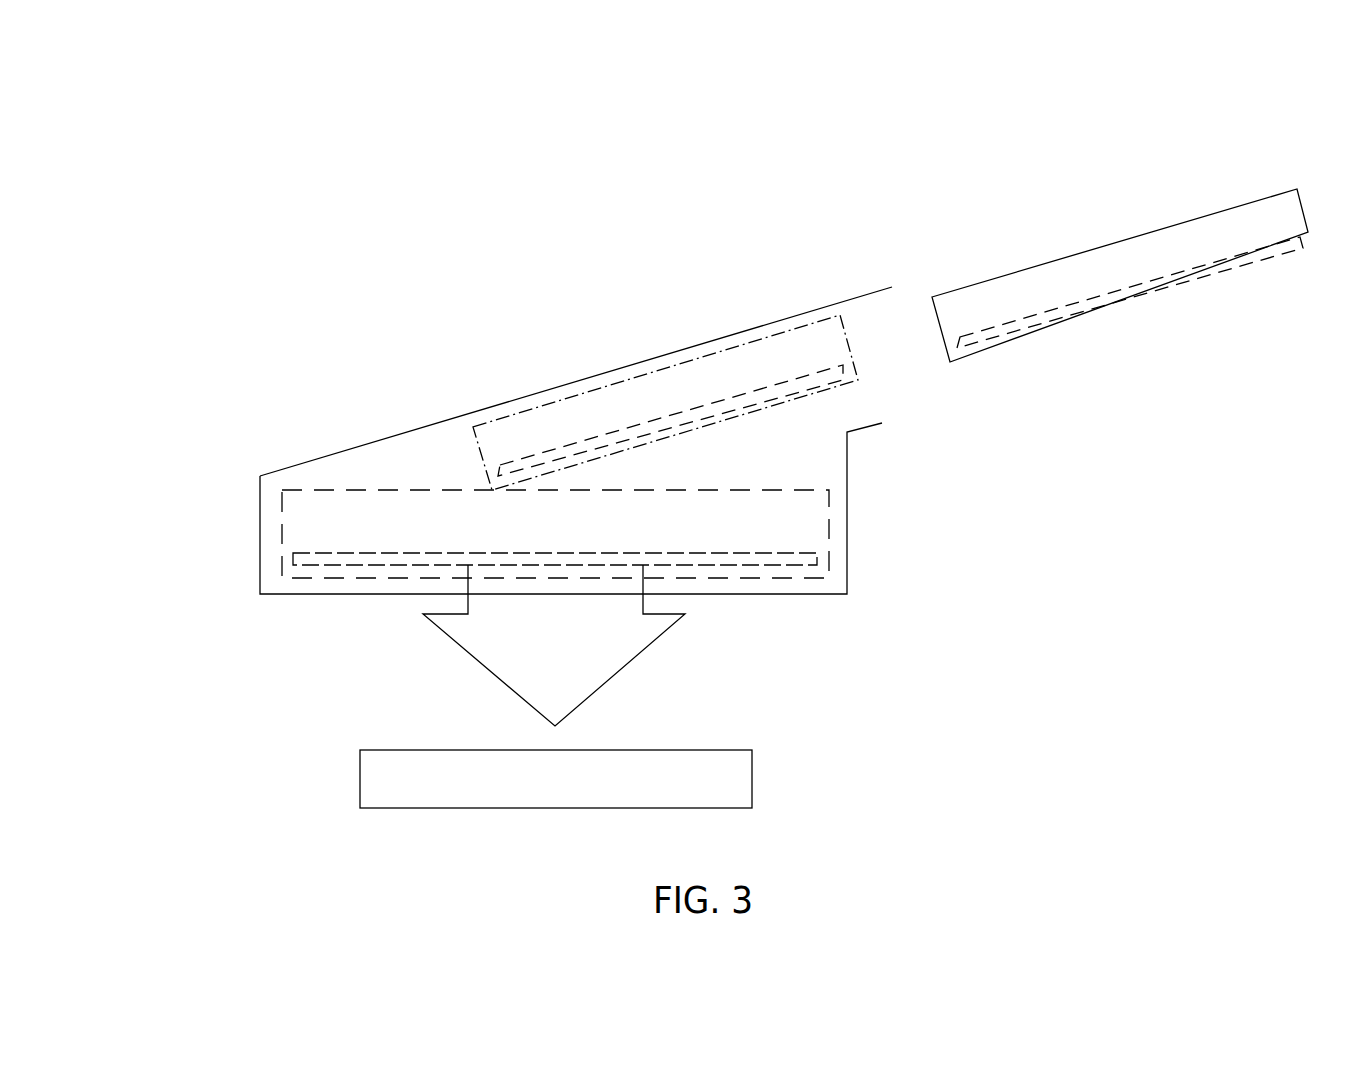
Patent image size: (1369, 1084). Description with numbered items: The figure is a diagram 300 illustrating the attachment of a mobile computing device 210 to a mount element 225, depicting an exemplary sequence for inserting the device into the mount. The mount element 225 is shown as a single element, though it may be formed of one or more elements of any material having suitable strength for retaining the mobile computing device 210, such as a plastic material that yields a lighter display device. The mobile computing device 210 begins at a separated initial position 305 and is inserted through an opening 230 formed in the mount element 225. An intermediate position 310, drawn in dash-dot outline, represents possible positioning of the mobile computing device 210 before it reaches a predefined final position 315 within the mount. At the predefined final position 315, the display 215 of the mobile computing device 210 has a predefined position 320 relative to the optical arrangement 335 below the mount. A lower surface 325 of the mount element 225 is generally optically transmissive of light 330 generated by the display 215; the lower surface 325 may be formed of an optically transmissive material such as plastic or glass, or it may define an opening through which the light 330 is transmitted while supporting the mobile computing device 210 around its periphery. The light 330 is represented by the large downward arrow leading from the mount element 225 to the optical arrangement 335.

The diagram 300 is at (205, 163).
The mobile computing device 210 is at (1215, 212).
The display 215 is at (1243, 258).
The mount element 225 is at (297, 466).
The opening 230 is at (895, 305).
The initial position 305 is at (1082, 218).
The intermediate position 310 is at (549, 402).
The predefined final position 315 is at (829, 497).
The predefined position 320 is at (822, 557).
The lower surface 325 is at (778, 596).
The light 330 is at (474, 661).
The optical arrangement 335 is at (740, 789).